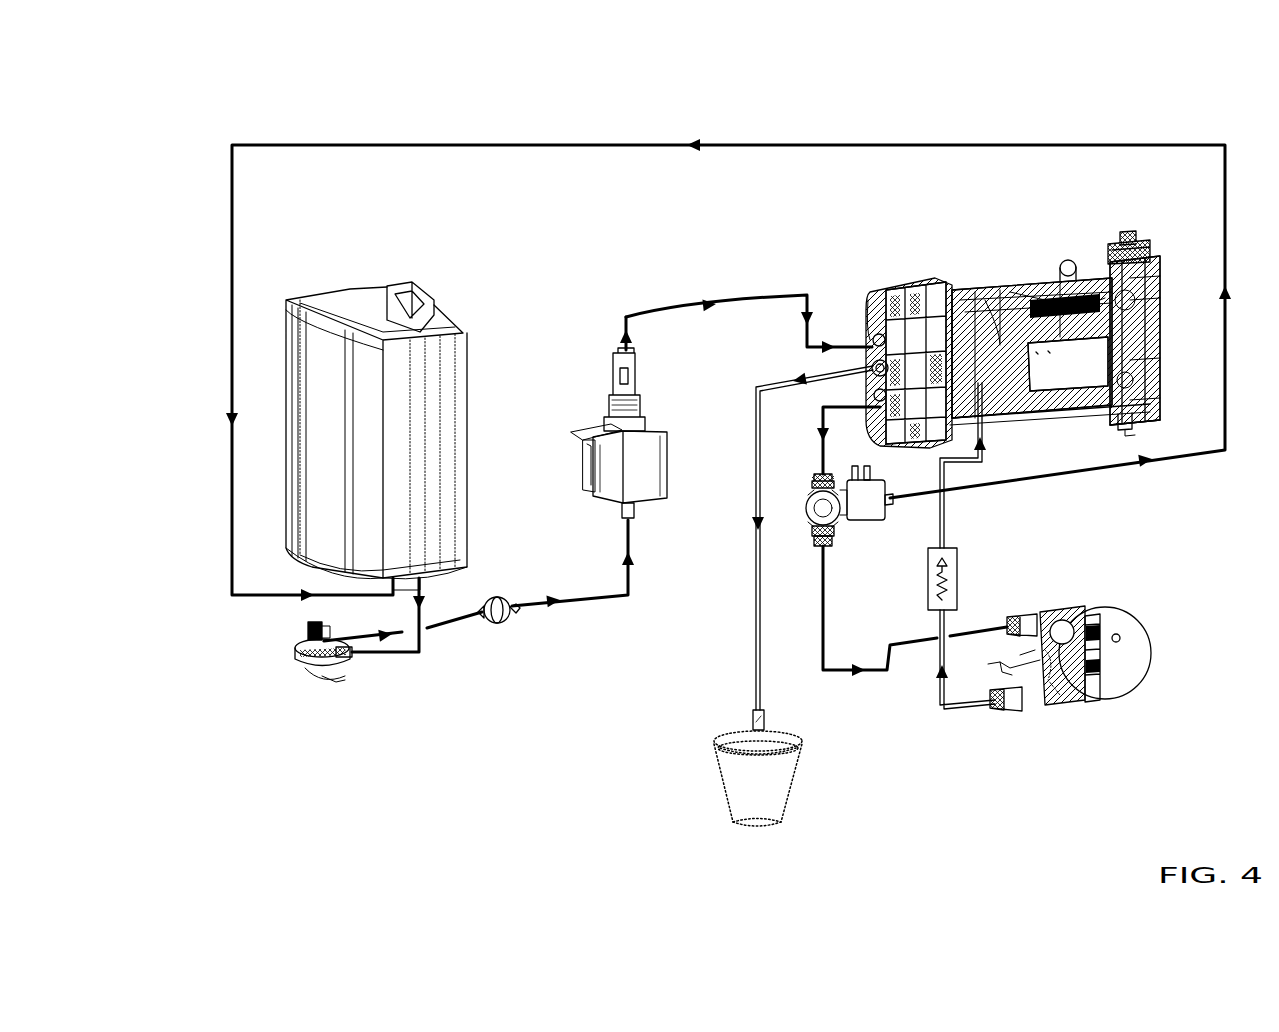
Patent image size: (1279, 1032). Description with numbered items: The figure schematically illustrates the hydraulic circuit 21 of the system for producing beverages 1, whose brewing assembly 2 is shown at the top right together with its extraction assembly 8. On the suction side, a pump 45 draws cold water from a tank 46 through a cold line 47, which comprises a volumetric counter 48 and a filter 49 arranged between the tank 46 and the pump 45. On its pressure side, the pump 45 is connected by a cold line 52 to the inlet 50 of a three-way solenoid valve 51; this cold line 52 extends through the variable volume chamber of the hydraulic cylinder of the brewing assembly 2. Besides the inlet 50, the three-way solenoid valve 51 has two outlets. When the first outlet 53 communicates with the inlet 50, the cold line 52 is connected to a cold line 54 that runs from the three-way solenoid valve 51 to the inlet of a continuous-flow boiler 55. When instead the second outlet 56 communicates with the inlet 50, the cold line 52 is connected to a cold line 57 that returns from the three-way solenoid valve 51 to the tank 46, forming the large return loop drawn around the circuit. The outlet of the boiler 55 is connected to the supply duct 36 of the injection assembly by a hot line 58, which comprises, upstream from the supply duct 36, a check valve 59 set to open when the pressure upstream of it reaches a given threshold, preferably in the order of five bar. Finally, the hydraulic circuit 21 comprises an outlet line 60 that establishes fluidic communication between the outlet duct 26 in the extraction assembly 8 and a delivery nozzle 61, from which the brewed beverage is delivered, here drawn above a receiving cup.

The system for producing beverages 1 is at (140, 143).
The brewing assembly 2 is at (1012, 283).
The extraction assembly 8 is at (868, 326).
The hydraulic circuit 21 is at (568, 108).
The outlet duct 26 is at (860, 366).
The supply duct 36 is at (1005, 422).
The pump 45 is at (662, 455).
The tank 46 is at (458, 400).
The cold line 47 is at (614, 614).
The volumetric counter 48 is at (300, 680).
The filter 49 is at (497, 625).
The inlet 50 is at (820, 472).
The three-way solenoid valve 51 is at (867, 530).
The cold line 52 is at (757, 288).
The first outlet 53 is at (825, 548).
The cold line 54 is at (882, 684).
The continuous-flow boiler 55 is at (1120, 700).
The second outlet 56 is at (890, 492).
The cold line 57 is at (310, 140).
The hot line 58 is at (955, 528).
The check valve 59 is at (960, 592).
The outlet line 60 is at (752, 552).
The delivery nozzle 61 is at (752, 722).